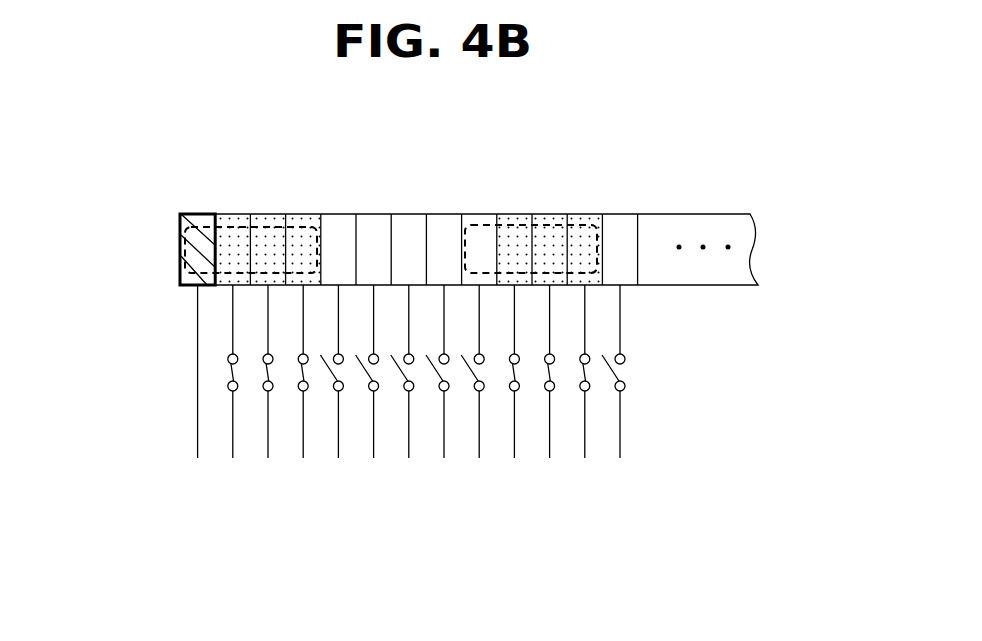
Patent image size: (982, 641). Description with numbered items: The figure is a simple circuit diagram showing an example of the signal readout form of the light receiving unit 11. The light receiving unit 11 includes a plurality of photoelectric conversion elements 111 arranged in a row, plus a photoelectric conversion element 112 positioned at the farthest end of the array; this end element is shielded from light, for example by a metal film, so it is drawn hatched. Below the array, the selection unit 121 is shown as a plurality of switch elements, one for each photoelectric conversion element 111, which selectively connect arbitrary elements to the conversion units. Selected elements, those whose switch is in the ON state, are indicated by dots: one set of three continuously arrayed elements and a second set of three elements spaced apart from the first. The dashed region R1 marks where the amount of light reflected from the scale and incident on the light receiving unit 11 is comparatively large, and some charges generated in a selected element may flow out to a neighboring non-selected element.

The light receiving unit 11 is at (464, 196).
The photoelectric conversion element 111 is at (690, 135).
The photoelectric conversion element 112 is at (180, 213).
The selection unit 121 is at (645, 366).
The region R1 is at (318, 247).